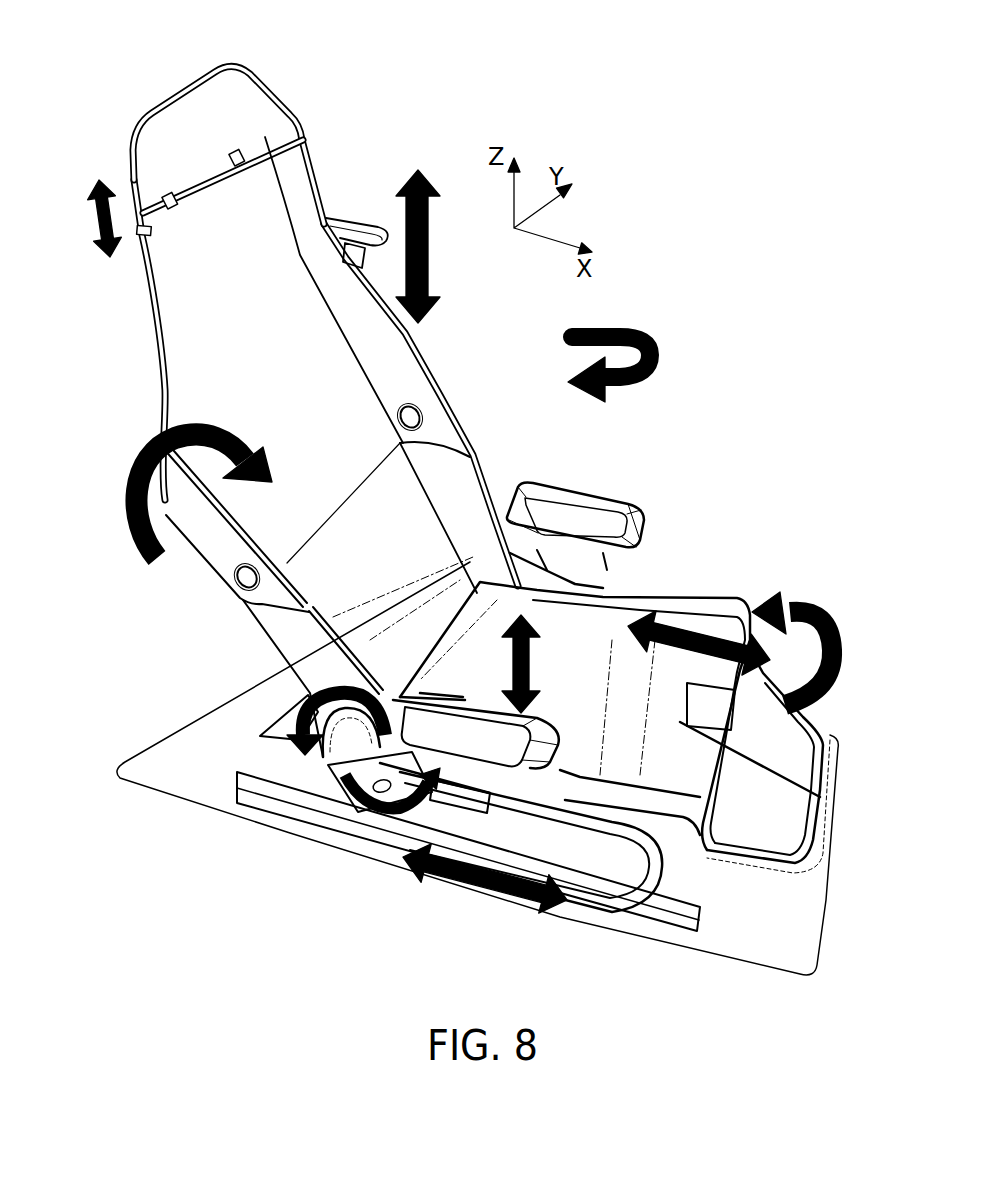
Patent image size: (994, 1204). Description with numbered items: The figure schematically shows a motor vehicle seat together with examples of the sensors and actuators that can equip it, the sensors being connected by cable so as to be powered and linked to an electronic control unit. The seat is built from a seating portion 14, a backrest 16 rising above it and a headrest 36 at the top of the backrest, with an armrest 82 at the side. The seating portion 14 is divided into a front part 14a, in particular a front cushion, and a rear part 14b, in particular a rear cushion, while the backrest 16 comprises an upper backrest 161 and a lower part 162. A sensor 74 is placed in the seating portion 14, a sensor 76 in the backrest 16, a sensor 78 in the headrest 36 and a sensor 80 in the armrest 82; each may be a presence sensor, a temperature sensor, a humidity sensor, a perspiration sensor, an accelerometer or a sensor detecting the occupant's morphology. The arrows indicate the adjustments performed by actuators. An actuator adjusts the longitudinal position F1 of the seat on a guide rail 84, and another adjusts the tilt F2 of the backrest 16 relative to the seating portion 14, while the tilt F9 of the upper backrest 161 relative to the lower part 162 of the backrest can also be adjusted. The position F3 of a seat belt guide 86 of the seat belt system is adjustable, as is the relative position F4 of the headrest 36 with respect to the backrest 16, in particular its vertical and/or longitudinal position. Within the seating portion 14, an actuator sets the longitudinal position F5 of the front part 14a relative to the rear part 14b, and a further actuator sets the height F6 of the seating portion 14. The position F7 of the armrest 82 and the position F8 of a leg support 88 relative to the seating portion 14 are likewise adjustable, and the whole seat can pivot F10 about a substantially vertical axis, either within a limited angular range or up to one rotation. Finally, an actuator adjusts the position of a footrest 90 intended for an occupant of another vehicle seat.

The seating portion 14 is at (647, 587).
The front part of the seating portion 14a is at (663, 763).
The rear part of the seating portion 14b is at (468, 697).
The backrest 16 is at (416, 365).
The upper backrest portion 161 is at (385, 297).
The lower backrest portion 162 is at (427, 509).
The headrest 36 is at (237, 118).
The sensor in the seating portion 74 is at (572, 687).
The sensor in the backrest 76 is at (263, 353).
The sensor in the headrest 78 is at (182, 130).
The sensor in the armrest 80 is at (595, 518).
The armrest 82 is at (627, 522).
The guide rail 84 is at (297, 807).
The seat belt guide 86 is at (357, 225).
The leg support 88 is at (800, 820).
The footrest 90 is at (265, 720).
The longitudinal position adjustment F1 is at (477, 887).
The backrest tilt adjustment F2 is at (300, 713).
The seat belt guide position adjustment F3 is at (430, 173).
The headrest position adjustment F4 is at (95, 182).
The front-part longitudinal position adjustment F5 is at (680, 632).
The seating portion height adjustment F6 is at (527, 618).
The armrest position adjustment F7 is at (348, 793).
The leg support position adjustment F8 is at (803, 607).
The upper backrest tilt adjustment F9 is at (130, 472).
The seat pivoting adjustment F10 is at (632, 328).